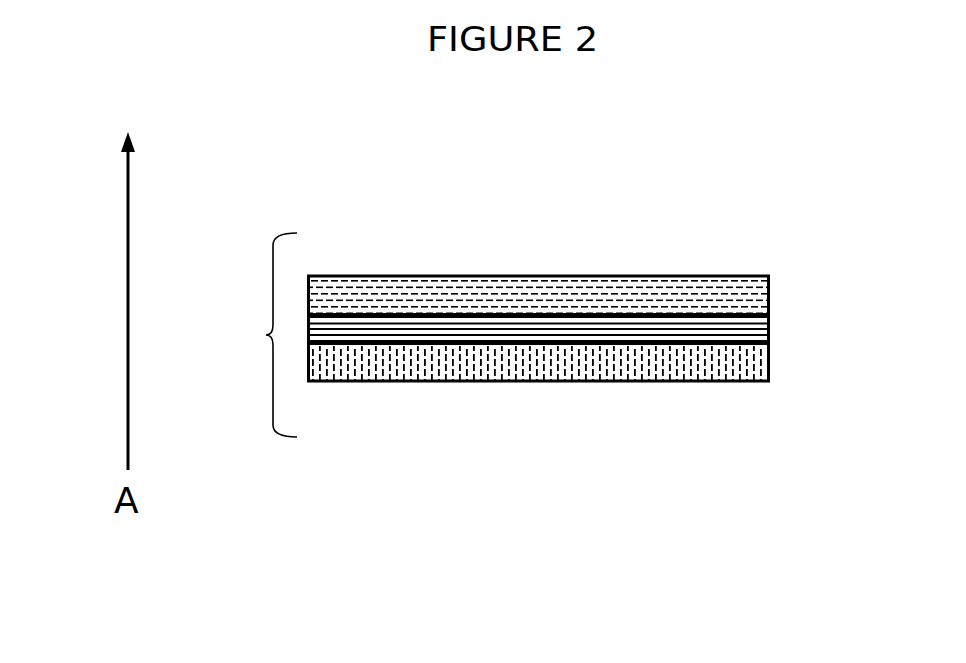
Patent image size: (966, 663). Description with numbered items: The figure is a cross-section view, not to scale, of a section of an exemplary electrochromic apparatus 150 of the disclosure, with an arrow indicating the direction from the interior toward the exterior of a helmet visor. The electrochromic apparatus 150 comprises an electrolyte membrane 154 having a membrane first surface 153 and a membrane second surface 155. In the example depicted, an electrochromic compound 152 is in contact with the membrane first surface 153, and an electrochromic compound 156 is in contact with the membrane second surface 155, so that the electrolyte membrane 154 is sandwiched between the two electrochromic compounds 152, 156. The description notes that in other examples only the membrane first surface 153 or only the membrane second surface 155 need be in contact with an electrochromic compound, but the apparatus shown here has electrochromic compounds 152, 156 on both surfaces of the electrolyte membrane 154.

The electrochromic apparatus 150 is at (268, 335).
The electrochromic compound 152 is at (746, 292).
The membrane first surface 153 is at (495, 313).
The electrolyte membrane 154 is at (746, 328).
The membrane second surface 155 is at (562, 346).
The electrochromic compound 156 is at (748, 365).